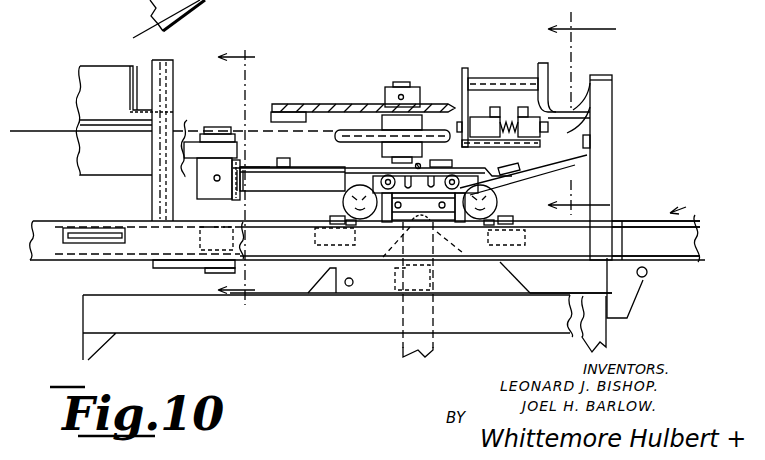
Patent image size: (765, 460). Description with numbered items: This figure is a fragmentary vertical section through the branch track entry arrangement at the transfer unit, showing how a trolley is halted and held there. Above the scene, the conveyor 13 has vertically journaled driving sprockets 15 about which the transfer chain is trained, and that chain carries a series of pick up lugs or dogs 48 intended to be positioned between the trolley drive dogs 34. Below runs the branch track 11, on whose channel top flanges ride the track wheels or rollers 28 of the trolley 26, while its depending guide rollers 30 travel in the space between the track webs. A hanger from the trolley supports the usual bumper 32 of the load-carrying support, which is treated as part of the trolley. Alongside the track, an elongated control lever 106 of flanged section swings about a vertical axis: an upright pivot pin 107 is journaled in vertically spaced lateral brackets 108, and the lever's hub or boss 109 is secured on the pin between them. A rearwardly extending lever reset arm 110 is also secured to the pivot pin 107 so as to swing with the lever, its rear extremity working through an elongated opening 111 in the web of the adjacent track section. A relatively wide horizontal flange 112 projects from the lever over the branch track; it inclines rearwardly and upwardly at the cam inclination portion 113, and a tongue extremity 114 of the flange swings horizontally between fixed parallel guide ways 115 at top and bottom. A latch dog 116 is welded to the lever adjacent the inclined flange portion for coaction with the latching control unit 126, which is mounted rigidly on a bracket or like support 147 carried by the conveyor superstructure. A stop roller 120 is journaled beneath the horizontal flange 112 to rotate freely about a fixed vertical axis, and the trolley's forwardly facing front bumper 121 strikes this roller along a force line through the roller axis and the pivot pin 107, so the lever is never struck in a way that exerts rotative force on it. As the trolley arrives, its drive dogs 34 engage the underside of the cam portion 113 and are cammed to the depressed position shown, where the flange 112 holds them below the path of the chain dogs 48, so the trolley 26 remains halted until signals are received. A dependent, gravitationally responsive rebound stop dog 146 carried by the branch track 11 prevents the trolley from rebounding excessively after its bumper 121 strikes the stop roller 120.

The branch track 11 is at (626, 108).
The conveyor 13 is at (253, 168).
The driving sprockets 15 is at (345, 130).
The trolley 26 is at (392, 240).
The track wheels or rollers 28 is at (343, 204).
The guide rollers 30 is at (318, 240).
The bumper 32 is at (300, 318).
The drive dogs 34 is at (419, 166).
The trolley pick up lugs or dogs 48 is at (449, 164).
The control lever 106 is at (256, 170).
The pivot pin 107 is at (240, 206).
The lateral brackets 108 is at (194, 140).
The hub or boss 109 is at (202, 186).
The lever reset arm 110 is at (102, 236).
The elongated opening 111 is at (78, 227).
The horizontal flange 112 is at (302, 168).
The cam inclination portion 113 is at (515, 172).
The tongue extremity 114 is at (588, 147).
The guide ways 115 is at (588, 132).
The latch dog 116 is at (545, 168).
The stop roller 120 is at (320, 178).
The front bumper 121 is at (346, 176).
The latching control unit 126 is at (490, 69).
The rebound stop dog 146 is at (638, 282).
The bracket or like support 147 is at (612, 264).